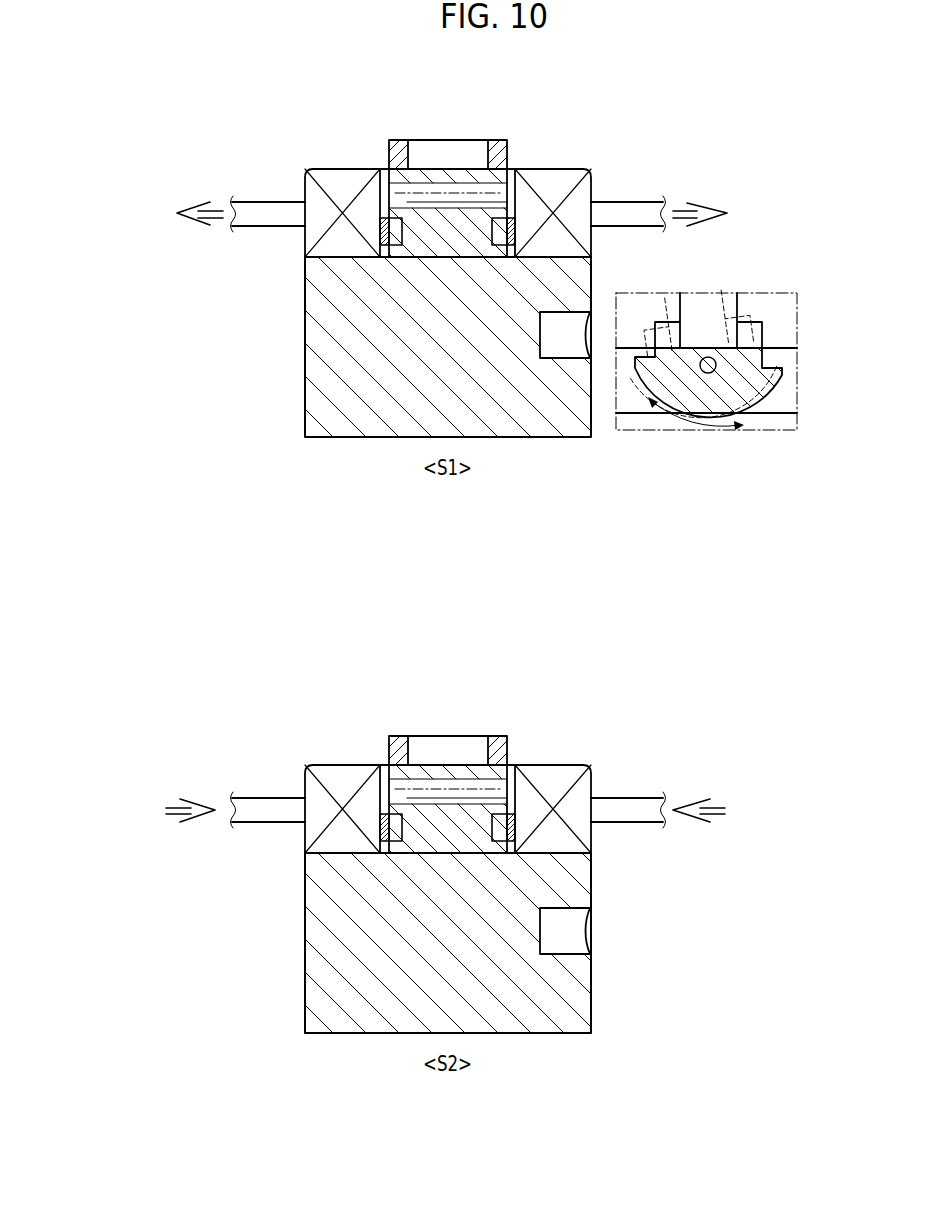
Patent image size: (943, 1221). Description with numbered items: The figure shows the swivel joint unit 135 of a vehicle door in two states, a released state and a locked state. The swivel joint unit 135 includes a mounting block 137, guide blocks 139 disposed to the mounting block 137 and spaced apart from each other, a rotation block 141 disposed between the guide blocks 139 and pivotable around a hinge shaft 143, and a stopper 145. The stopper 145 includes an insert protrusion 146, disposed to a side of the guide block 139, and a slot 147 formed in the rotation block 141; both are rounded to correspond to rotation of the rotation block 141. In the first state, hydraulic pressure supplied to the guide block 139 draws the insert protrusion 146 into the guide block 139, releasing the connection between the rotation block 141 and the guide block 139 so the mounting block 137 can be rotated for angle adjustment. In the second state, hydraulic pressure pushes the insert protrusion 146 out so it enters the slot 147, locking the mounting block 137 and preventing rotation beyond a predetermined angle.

The swivel joint unit 135 is at (594, 121).
The mounting block 137 is at (322, 404).
The guide block 139 is at (370, 215).
The rotation block 141 is at (463, 172).
The hinge shaft 143 is at (383, 167).
The stopper 145 is at (392, 264).
The insert protrusion 146 is at (382, 250).
The slot 147 is at (340, 180).